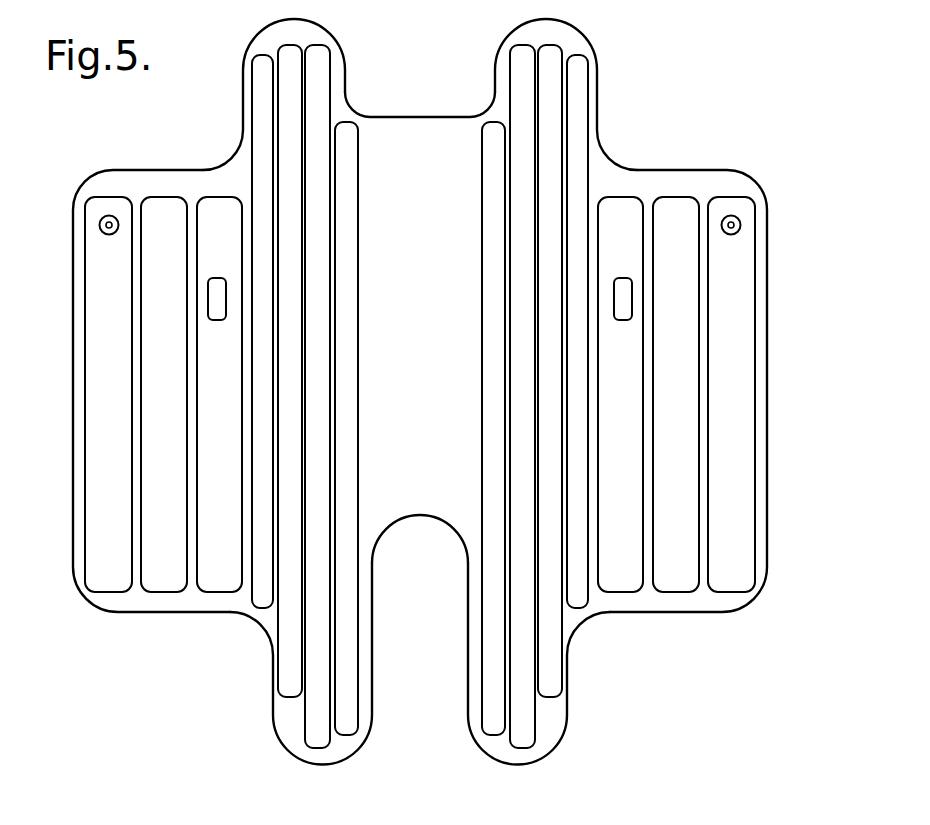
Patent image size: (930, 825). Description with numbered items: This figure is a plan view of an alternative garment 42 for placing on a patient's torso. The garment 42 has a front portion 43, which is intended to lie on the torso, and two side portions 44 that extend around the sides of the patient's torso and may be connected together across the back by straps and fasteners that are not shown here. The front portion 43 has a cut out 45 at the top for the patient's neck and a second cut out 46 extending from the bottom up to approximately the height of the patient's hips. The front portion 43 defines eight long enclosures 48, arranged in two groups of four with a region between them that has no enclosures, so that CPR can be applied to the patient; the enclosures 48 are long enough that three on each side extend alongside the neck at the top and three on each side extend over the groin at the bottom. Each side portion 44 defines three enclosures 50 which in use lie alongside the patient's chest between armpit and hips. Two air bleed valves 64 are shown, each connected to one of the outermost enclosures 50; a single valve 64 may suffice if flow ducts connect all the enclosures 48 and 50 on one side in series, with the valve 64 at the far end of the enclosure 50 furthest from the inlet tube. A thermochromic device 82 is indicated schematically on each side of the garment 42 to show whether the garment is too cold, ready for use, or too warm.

The garment 42 is at (604, 147).
The front portion 43 is at (430, 248).
The side portions 44 is at (173, 600).
The cut out 45 is at (400, 147).
The cut out 46 is at (372, 633).
The enclosures 48 is at (347, 713).
The enclosures 50 is at (215, 200).
The air bleed valve 64 is at (100, 231).
The thermochromic device 82 is at (215, 298).